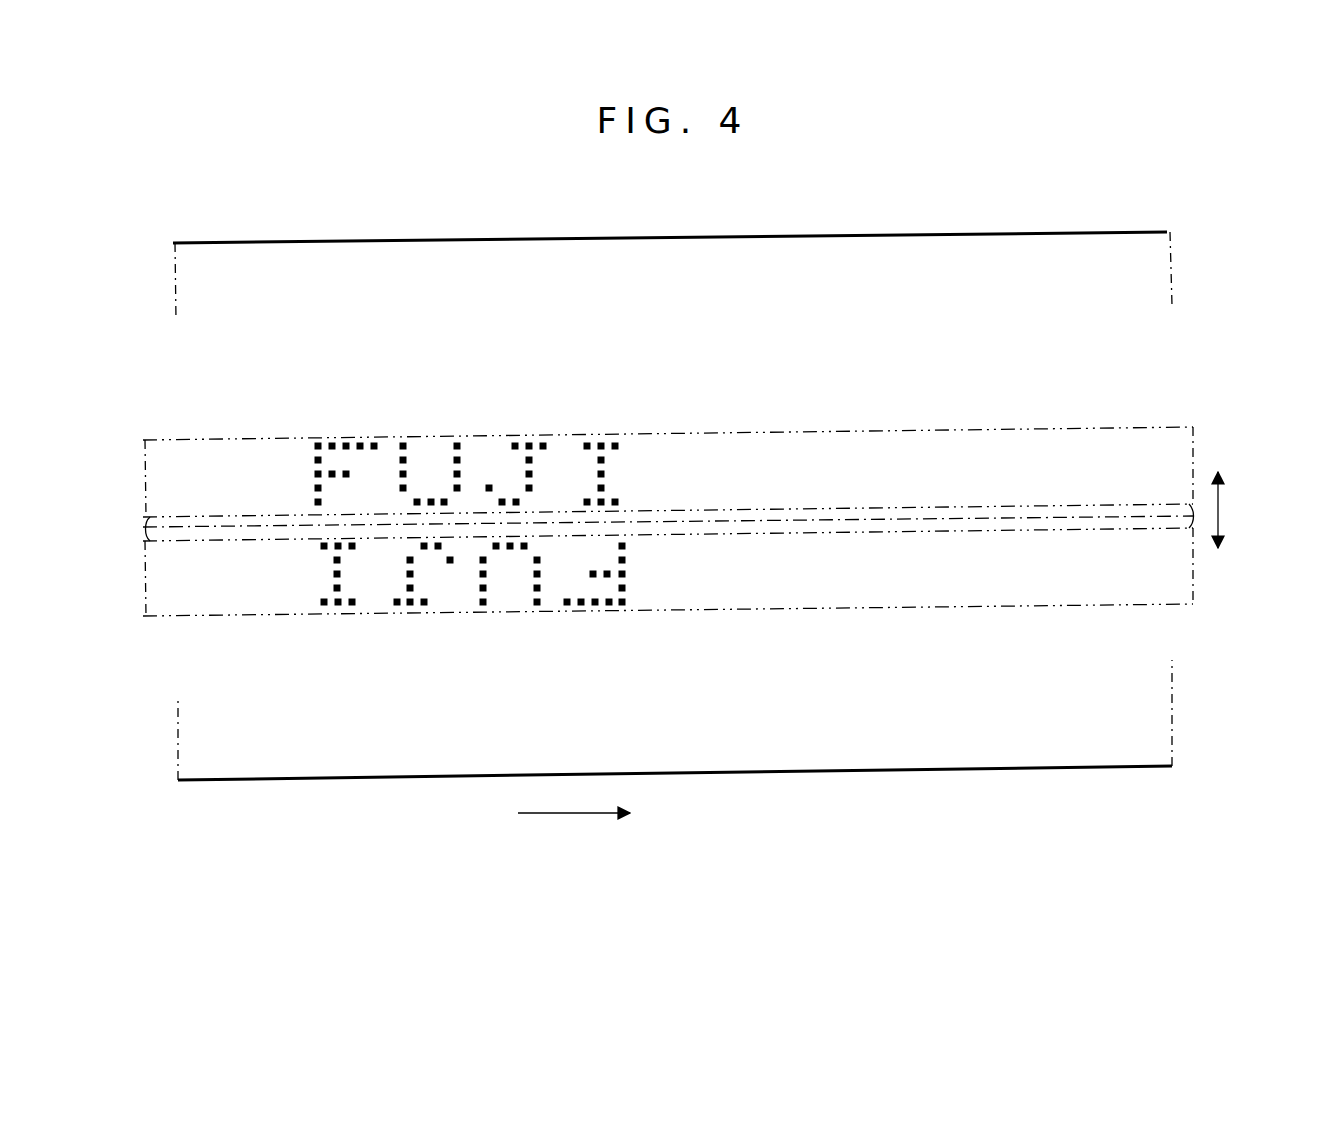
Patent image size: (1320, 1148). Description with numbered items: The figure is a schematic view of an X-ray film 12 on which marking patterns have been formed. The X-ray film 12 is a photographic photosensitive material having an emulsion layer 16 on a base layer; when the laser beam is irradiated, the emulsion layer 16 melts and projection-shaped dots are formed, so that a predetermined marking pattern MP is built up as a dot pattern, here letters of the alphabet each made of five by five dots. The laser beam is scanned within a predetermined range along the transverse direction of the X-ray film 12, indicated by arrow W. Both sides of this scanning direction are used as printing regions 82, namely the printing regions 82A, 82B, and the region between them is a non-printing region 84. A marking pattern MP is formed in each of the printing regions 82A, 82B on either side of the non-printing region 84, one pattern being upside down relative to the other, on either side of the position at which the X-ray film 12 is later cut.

The X-ray film 12 is at (1080, 768).
The emulsion layer 16 is at (942, 745).
The printing regions 82 is at (668, 521).
The printing region 82A is at (914, 448).
The printing region 82B is at (913, 593).
The non-printing region 84 is at (1005, 526).
The marking pattern MP is at (572, 404).
The transverse direction W is at (1219, 508).